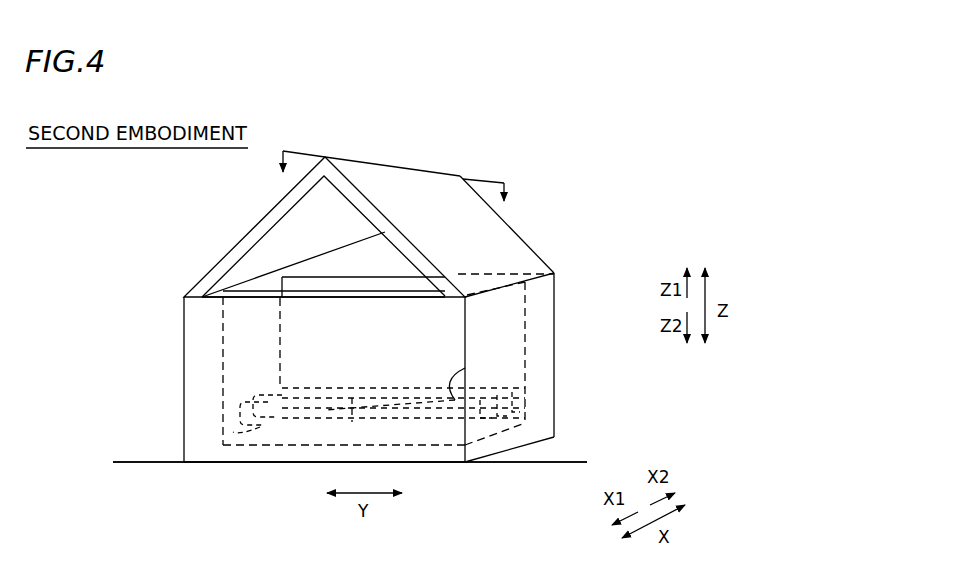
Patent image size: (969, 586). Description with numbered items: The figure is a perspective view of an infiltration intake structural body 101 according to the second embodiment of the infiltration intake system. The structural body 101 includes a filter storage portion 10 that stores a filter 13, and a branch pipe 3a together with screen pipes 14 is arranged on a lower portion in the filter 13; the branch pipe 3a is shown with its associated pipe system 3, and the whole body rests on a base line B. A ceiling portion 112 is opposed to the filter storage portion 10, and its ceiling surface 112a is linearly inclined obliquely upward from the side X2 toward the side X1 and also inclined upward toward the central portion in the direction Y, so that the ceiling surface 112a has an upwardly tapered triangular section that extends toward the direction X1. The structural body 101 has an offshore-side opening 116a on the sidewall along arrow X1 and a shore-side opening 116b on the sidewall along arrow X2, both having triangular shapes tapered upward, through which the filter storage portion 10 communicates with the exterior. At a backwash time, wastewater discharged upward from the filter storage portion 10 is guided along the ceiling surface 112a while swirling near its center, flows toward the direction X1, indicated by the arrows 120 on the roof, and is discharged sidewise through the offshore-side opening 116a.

The infiltration intake structural body 101 is at (365, 288).
The ceiling portion 112 is at (356, 205).
The ceiling surface 112a is at (300, 216).
The filter 13 is at (352, 290).
The flow direction along roof 120 is at (393, 180).
The filter storage portion 10 is at (537, 340).
The offshore-side opening 116a is at (224, 299).
The shore-side opening 116b is at (397, 275).
The cultivation unit 3 is at (449, 392).
The branch pipe 3a is at (465, 368).
The screen pipes 14 is at (275, 395).
The base / floor surface B is at (128, 460).